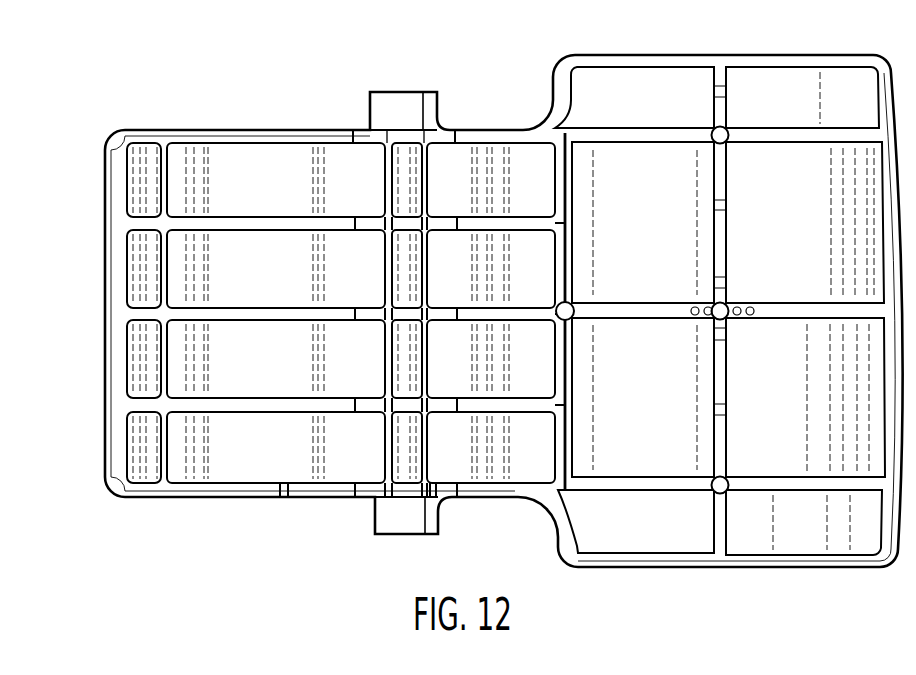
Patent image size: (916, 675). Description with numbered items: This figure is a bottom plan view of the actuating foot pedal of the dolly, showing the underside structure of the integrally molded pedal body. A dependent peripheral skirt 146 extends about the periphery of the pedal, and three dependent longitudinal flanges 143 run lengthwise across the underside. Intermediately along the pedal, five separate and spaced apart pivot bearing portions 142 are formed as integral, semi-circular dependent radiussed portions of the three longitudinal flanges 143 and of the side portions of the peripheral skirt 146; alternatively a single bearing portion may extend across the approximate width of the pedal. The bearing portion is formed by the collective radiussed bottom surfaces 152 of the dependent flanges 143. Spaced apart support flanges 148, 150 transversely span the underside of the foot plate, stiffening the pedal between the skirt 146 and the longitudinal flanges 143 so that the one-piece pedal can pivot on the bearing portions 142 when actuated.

The pivot bearing portions 142 is at (380, 226).
The longitudinal flanges 143 is at (190, 232).
The dependent peripheral skirt 146 is at (195, 122).
The support flange 148 is at (720, 540).
The support flange 150 is at (560, 460).
The radiussed bottom surfaces 152 is at (410, 407).